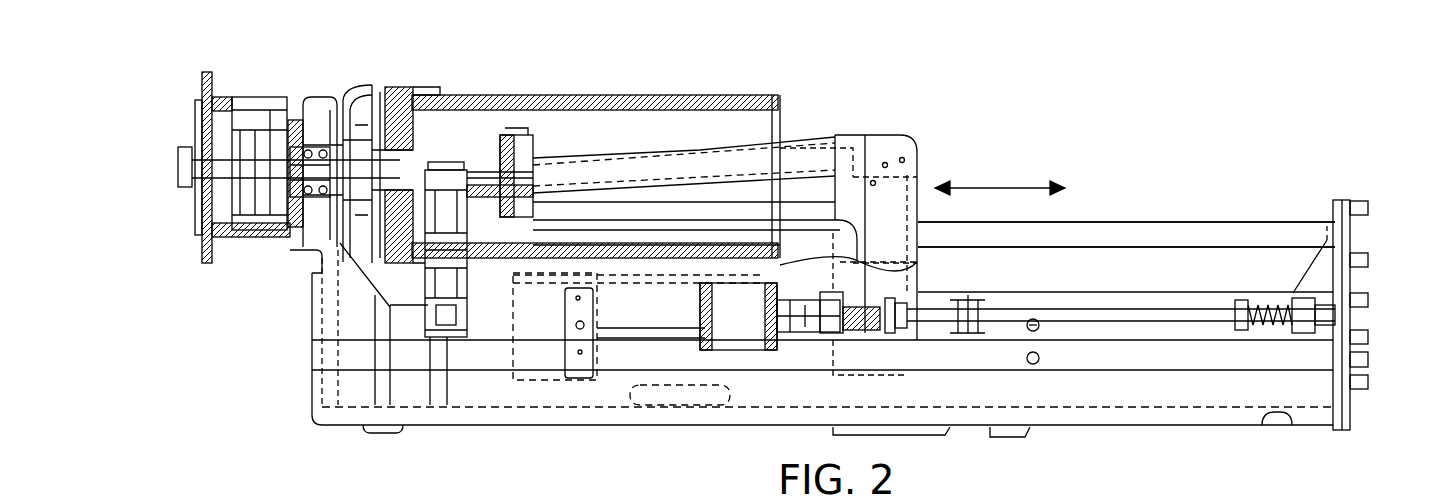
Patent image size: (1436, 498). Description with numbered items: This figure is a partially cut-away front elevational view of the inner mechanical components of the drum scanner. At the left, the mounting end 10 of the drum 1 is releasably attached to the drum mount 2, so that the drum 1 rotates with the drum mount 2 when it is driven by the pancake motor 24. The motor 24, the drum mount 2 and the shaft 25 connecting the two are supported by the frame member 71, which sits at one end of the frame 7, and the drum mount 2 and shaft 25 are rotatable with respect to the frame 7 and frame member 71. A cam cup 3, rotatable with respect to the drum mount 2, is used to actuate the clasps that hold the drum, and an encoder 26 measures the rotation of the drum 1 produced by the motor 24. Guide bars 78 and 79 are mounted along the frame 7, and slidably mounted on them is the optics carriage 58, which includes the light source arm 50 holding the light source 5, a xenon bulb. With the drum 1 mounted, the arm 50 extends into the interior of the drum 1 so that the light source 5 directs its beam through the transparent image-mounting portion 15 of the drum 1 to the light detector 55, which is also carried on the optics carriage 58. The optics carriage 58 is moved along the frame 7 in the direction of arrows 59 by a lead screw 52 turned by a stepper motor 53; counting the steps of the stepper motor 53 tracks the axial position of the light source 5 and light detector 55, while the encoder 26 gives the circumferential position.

The drum 1 is at (650, 78).
The drum mount 2 is at (387, 97).
The cam cup 3 is at (352, 100).
The light source 5 is at (450, 165).
The frame 7 is at (1362, 405).
The mounting end 10 is at (420, 92).
The transparent image-mounting portion 15 is at (575, 95).
The pancake motor 24 is at (190, 90).
The shaft 25 is at (348, 168).
The encoder 26 is at (260, 130).
The light source arm 50 is at (698, 148).
The lead screw 52 is at (860, 332).
The stepper motor 53 is at (648, 347).
The light detector 55 is at (430, 287).
The optics carriage 58 is at (853, 262).
The arrows 59 is at (995, 188).
The frame member 71 is at (312, 275).
The guide bar 78 is at (1057, 340).
The guide bar 79 is at (1183, 222).